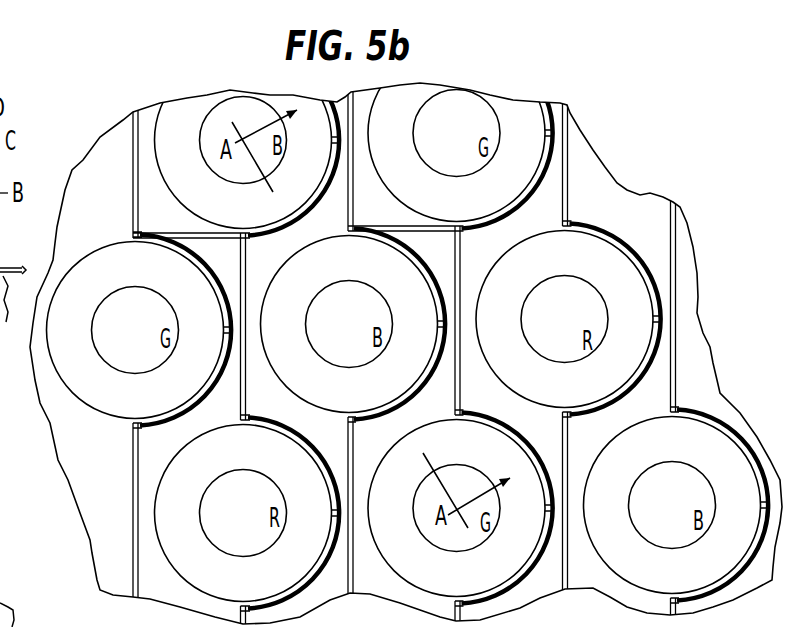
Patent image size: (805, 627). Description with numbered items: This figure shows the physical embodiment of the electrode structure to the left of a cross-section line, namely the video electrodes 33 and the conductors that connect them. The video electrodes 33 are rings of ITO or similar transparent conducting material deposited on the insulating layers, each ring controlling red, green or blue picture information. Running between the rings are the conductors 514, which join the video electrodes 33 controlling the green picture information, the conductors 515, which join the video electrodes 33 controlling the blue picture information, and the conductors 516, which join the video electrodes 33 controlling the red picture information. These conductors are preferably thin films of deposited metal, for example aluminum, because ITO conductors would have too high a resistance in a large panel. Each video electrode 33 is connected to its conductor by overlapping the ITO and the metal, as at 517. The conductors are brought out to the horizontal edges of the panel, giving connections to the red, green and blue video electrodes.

The video electrodes 33 is at (63, 266).
The conductors 514 is at (133, 193).
The conductors 515 is at (348, 194).
The conductors 516 is at (561, 200).
The overlap of ITO and metal 517 is at (220, 318).